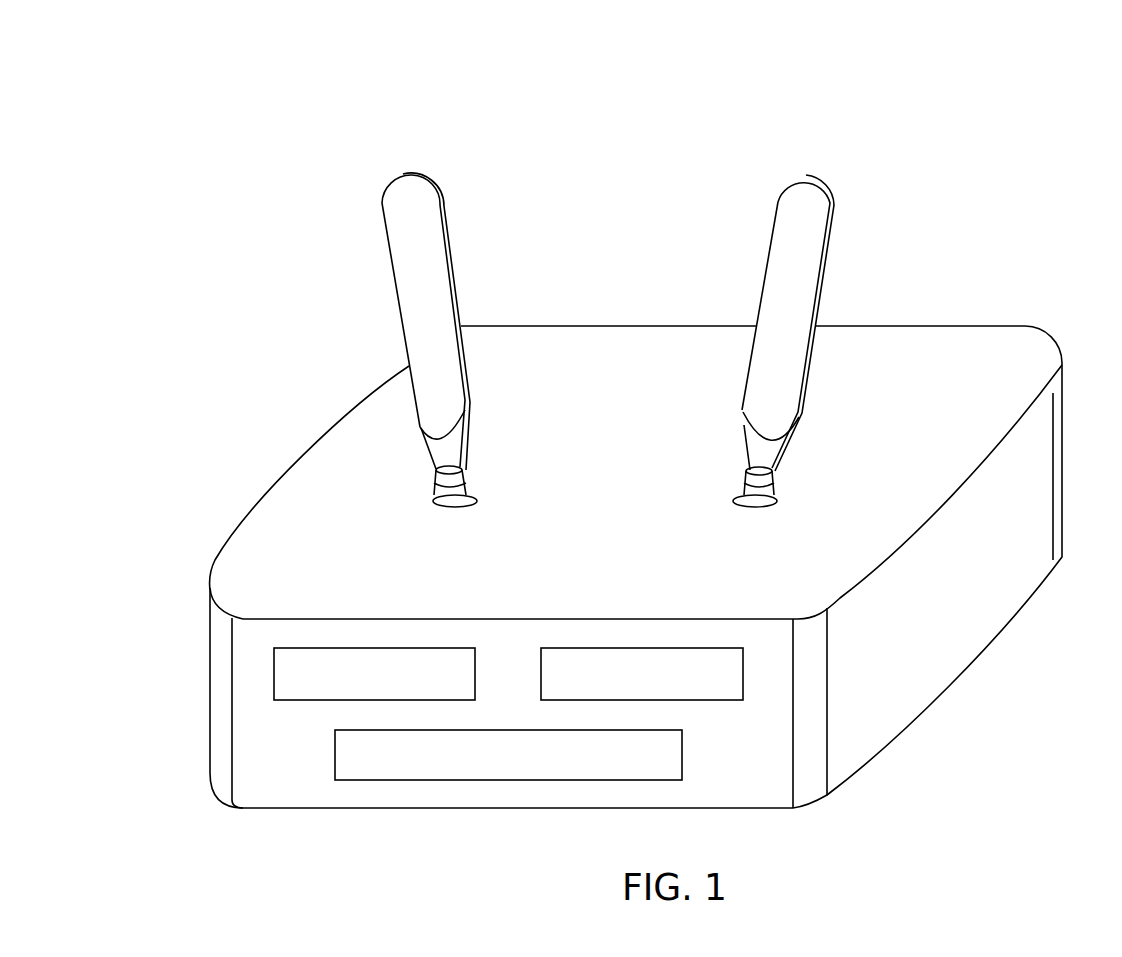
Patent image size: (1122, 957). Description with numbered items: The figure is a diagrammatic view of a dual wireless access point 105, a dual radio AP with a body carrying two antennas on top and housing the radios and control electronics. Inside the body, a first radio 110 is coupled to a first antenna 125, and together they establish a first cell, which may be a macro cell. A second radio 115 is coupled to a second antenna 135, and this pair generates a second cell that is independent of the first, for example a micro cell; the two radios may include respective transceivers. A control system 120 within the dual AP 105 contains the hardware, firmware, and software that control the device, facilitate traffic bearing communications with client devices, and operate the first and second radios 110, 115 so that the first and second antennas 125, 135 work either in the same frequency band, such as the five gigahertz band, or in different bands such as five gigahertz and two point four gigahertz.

The dual wireless access point 105 is at (152, 56).
The first radio 110 is at (451, 685).
The second radio 115 is at (718, 685).
The control system 120 is at (659, 765).
The first antenna 125 is at (412, 168).
The second antenna 135 is at (812, 168).